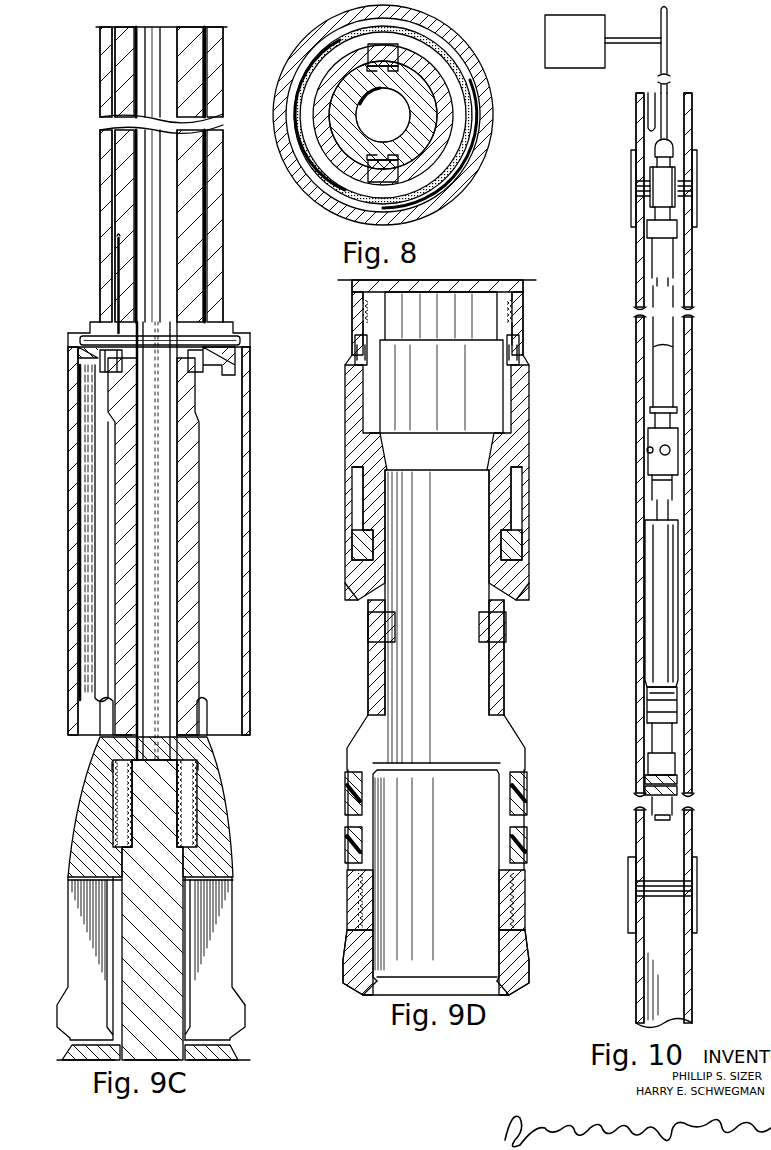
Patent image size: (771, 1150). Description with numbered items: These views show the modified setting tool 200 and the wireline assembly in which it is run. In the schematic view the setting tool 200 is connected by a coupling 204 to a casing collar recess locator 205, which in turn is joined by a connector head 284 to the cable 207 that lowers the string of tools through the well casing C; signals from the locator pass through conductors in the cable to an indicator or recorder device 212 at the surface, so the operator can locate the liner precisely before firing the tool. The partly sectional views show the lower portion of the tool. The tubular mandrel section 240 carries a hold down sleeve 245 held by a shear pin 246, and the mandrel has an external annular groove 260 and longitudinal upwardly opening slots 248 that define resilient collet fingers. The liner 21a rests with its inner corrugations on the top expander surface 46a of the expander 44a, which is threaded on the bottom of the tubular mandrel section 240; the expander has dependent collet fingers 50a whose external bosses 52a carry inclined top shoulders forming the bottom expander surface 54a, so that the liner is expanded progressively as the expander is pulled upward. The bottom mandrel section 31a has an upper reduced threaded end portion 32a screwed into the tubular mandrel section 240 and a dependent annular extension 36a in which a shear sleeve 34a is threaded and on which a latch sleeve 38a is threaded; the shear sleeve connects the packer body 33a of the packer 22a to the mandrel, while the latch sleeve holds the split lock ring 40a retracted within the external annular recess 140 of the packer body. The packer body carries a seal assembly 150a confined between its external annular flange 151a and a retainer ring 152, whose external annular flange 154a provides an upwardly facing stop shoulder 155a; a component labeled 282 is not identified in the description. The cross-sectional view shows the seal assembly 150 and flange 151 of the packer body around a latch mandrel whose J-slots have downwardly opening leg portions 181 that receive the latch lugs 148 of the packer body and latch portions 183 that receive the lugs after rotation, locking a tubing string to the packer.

In FIG. 9C, the longitudinal upwardly opening slots 248 is at (221, 42).
In FIG. 9C, the hold down sleeve 245 is at (214, 222).
In FIG. 9C, the external annular groove 260 is at (116, 238).
In FIG. 9C, the shear pin 246 is at (226, 338).
In FIG. 9C, the retainer blocks 282 is at (204, 364).
In FIG. 9C, the liner 21a is at (245, 445).
In FIG. 10, the liner 21a is at (678, 590).
In FIG. 9C, the tubular mandrel section 240 is at (190, 551).
In FIG. 9C, the top expander surface 46a is at (217, 751).
In FIG. 9C, the upper reduced threaded end portion 32a is at (172, 785).
In FIG. 9C, the expander 44a is at (233, 821).
In FIG. 10, the expander 44a is at (678, 706).
In FIG. 9C, the bottom mandrel section 31a is at (178, 944).
In FIG. 9C, the collet fingers 50a is at (217, 968).
In FIG. 9C, the bottom expander surface 54a is at (278, 991).
In FIG. 9C, the external bosses 52a is at (288, 1015).
In FIG. 8, the seal assembly 150 is at (470, 88).
In FIG. 8, the external annular flange 151 is at (464, 128).
In FIG. 8, the downwardly opening leg portions 181 is at (346, 90).
In FIG. 8, the latch portions 183 is at (397, 155).
In FIG. 8, the latch lugs 148 is at (383, 50).
In FIG. 9D, the latch lugs 148 is at (468, 633).
In FIG. 9D, the dependent annular extension 36a is at (511, 298).
In FIG. 9D, the shear sleeve 34a is at (504, 362).
In FIG. 9D, the latch sleeve 38a is at (569, 408).
In FIG. 9D, the external annular recess 140 is at (513, 503).
In FIG. 9D, the split lock ring 40a is at (521, 552).
In FIG. 9D, the packer body 33a is at (366, 576).
In FIG. 9D, the packer 22a is at (498, 697).
In FIG. 10, the packer 22a is at (674, 763).
In FIG. 9D, the external annular flange 151a is at (562, 741).
In FIG. 9D, the seal assembly 150a is at (569, 791).
In FIG. 10, the seal assembly 150a is at (740, 786).
In FIG. 9D, the retainer ring 152 is at (512, 898).
In FIG. 9D, the upwardly facing stop shoulder 155a is at (569, 935).
In FIG. 9D, the external annular flange 154a is at (572, 975).
In FIG. 10, the indicator or recorder device 212 is at (578, 60).
In FIG. 10, the cable 207 is at (668, 57).
In FIG. 10, the well casing C is at (693, 340).
In FIG. 10, the connector head 284 is at (668, 138).
In FIG. 10, the casing collar recess locator 205 is at (679, 187).
In FIG. 10, the coupling 204 is at (678, 230).
In FIG. 10, the setting tool 200 is at (677, 452).